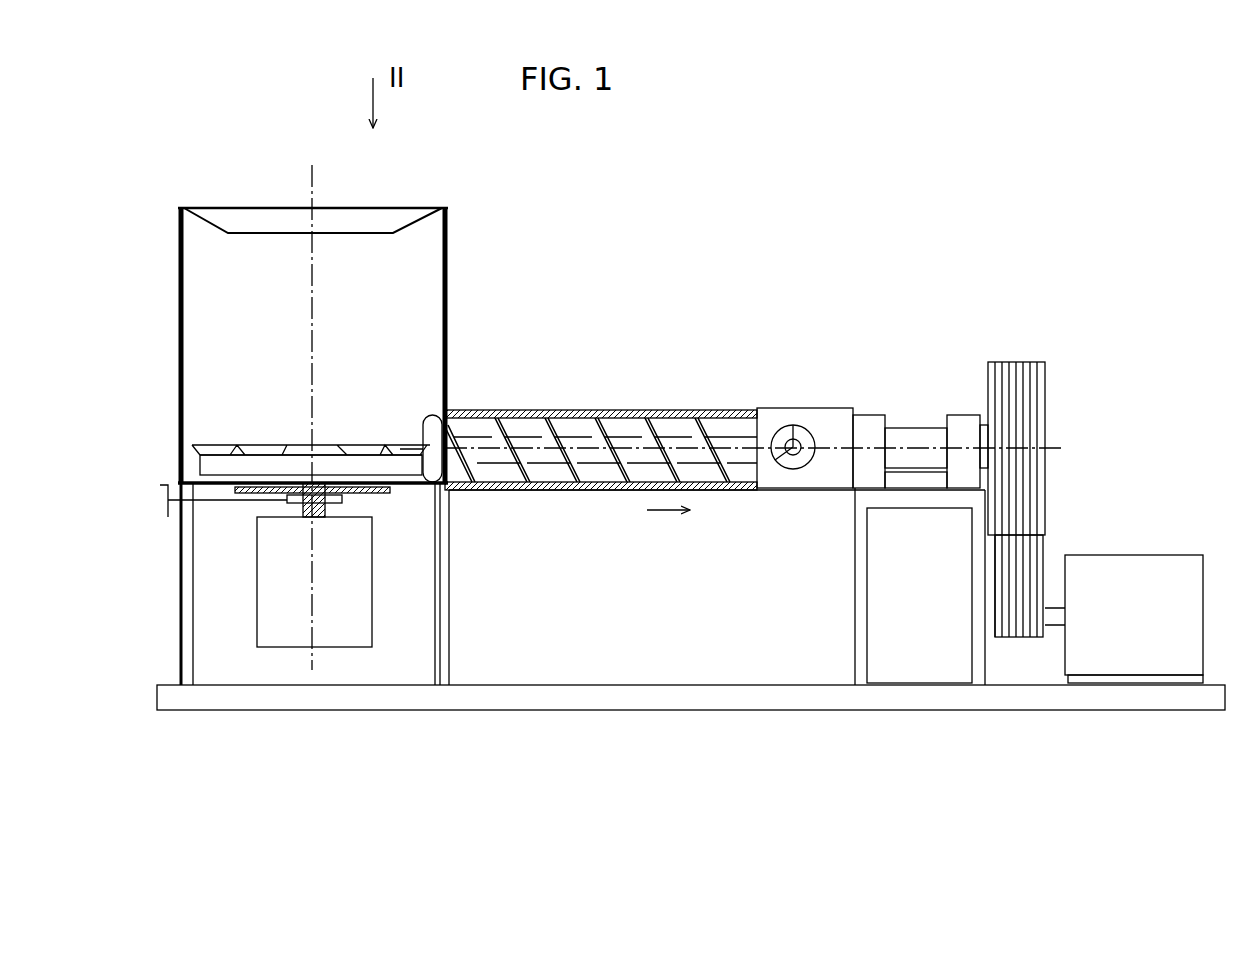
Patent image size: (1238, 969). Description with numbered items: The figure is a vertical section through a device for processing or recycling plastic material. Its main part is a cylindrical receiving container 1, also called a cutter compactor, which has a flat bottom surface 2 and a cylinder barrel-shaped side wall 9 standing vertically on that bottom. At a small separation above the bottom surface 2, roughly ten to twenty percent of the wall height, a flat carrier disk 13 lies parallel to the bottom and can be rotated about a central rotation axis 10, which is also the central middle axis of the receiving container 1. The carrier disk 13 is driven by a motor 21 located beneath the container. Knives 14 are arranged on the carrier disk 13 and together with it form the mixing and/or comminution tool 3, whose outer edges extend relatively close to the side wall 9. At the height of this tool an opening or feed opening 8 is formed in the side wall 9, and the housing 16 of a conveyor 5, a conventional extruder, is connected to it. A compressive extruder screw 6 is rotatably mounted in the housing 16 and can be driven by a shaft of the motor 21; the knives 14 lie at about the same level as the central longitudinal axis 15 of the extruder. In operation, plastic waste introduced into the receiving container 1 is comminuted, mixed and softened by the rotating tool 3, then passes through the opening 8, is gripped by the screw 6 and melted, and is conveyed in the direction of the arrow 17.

The receiving container 1 is at (455, 270).
The bottom surface 2 is at (398, 488).
The mixing and/or comminution tool 3 is at (190, 467).
The conveyor 5 is at (726, 404).
The extruder screw 6 is at (683, 447).
The feed opening 8 is at (427, 407).
The side wall 9 is at (447, 316).
The rotation axis 10 is at (312, 193).
The carrier disk 13 is at (297, 452).
The knives 14 is at (221, 452).
The central longitudinal axis 15 is at (535, 452).
The housing 16 is at (580, 408).
The conveying direction arrow 17 is at (659, 516).
The motor 21 is at (296, 620).